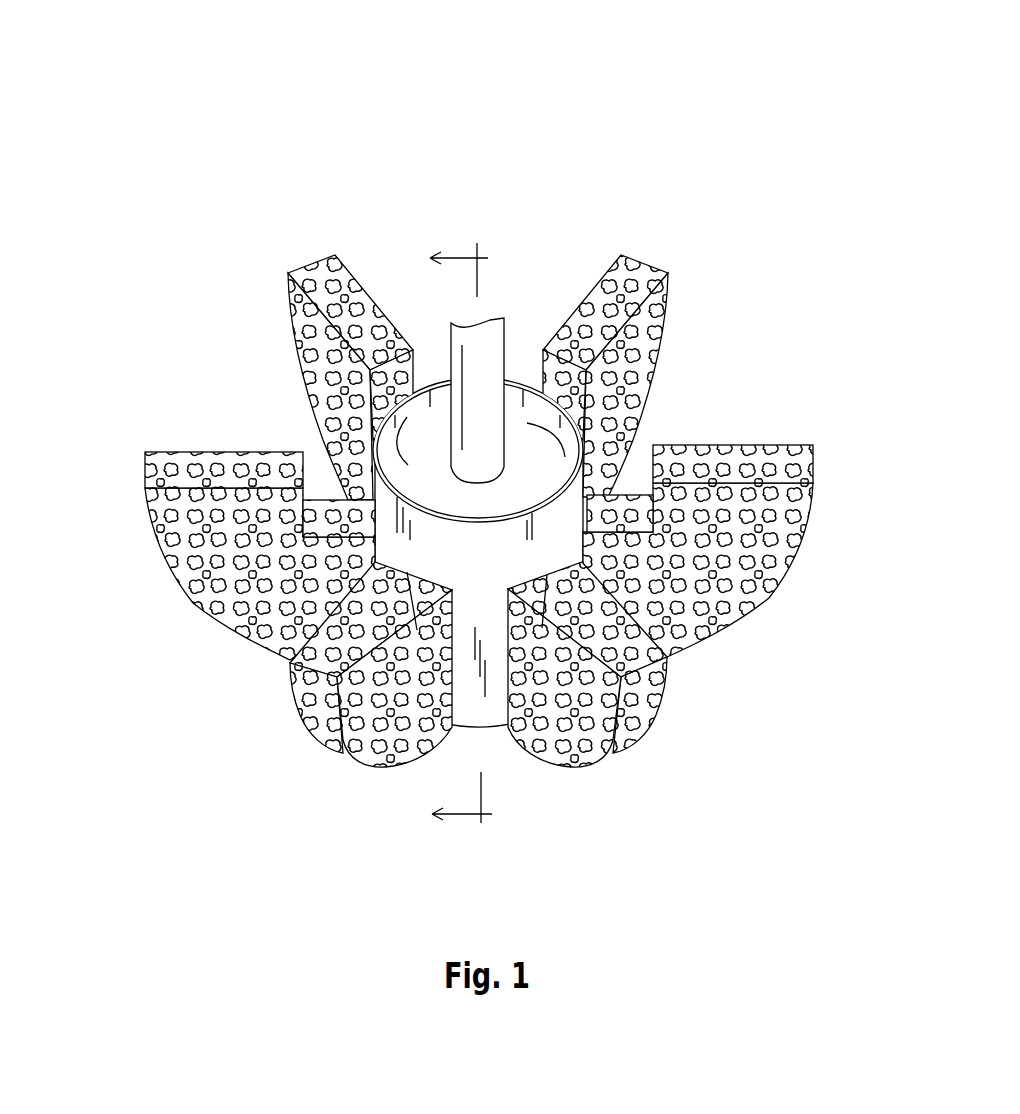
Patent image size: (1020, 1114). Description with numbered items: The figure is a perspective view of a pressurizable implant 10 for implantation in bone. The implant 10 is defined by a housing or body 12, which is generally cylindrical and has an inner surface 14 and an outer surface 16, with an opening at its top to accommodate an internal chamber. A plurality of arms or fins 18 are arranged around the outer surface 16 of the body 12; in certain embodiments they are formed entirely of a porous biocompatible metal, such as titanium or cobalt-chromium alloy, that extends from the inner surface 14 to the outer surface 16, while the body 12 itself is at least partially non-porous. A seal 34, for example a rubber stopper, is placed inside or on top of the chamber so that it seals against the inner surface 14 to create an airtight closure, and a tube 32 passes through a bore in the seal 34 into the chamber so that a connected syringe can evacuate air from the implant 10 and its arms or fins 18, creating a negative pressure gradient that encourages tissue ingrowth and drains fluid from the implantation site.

The pressurizable implant 10 is at (581, 121).
The body 12 is at (507, 752).
The inner surface 14 is at (581, 420).
The outer surface 16 is at (612, 495).
The arms or fins 18 is at (478, 511).
The tube 32 is at (500, 345).
The seal 34 is at (384, 415).